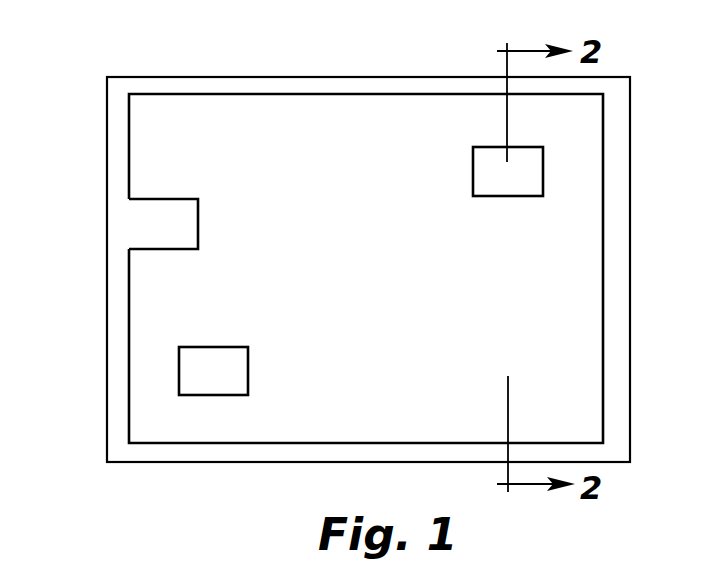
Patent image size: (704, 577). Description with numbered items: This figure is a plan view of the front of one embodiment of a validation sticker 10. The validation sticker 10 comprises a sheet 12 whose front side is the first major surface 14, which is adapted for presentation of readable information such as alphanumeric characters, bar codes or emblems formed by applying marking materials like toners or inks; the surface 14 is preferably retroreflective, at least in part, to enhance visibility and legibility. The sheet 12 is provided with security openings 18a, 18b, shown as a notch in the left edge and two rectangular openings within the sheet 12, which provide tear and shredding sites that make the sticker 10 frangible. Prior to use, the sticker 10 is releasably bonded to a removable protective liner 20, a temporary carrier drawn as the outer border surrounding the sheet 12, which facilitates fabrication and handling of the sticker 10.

The validation sticker 10 is at (292, 93).
The sheet 12 is at (568, 315).
The first major surface 14 is at (396, 120).
The security opening 18a is at (160, 199).
The security opening 18b is at (540, 173).
The removable protective liner 20 is at (141, 85).